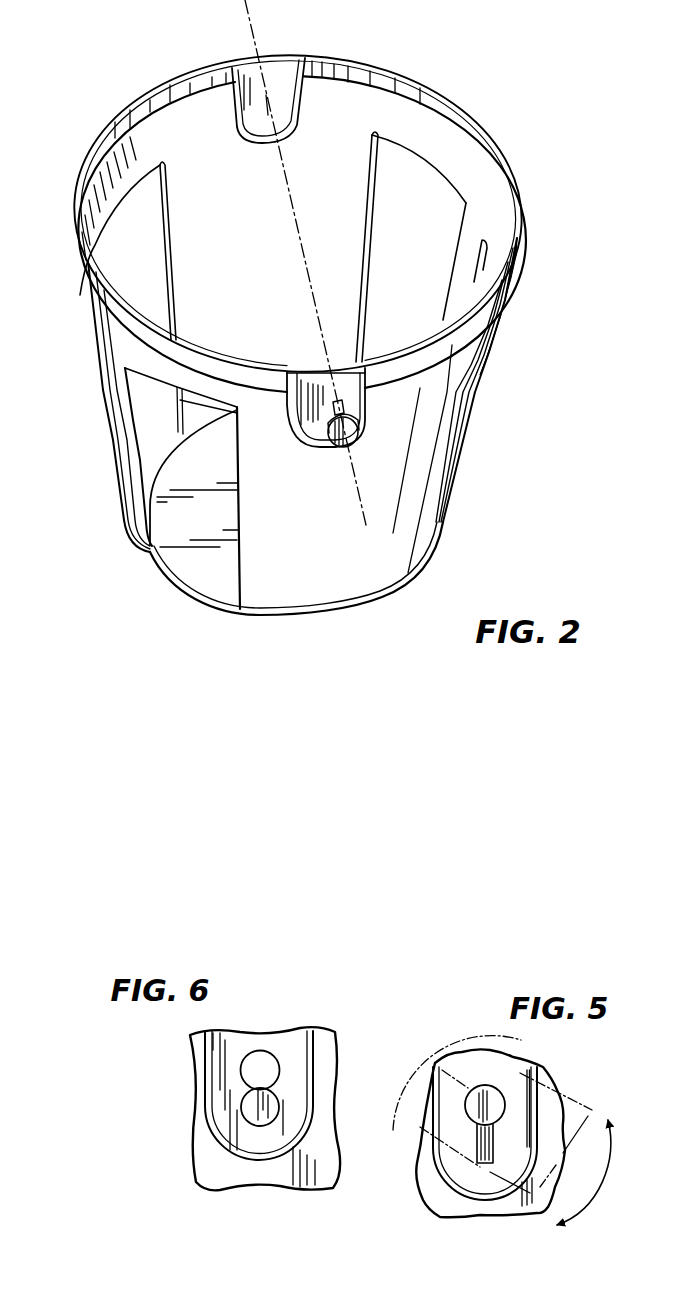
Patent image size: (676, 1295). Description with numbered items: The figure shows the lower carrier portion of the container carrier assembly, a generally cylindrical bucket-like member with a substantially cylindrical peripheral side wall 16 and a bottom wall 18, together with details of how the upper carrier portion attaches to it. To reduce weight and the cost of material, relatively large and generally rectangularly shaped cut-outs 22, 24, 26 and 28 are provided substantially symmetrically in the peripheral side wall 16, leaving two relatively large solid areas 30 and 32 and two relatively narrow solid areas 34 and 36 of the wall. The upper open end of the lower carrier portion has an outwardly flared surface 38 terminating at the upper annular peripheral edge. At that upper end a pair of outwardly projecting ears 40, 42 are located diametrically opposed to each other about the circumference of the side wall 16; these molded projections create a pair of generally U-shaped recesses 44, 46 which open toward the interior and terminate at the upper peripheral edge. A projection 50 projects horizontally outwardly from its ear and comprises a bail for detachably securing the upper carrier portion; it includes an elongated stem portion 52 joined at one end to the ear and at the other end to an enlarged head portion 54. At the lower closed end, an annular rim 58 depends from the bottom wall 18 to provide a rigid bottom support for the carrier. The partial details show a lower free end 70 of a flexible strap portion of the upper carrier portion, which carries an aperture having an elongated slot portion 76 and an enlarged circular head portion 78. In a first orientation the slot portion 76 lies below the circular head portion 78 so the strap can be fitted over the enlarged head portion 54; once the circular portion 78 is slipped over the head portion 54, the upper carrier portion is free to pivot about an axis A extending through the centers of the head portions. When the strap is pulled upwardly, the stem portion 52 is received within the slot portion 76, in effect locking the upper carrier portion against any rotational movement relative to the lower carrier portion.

In FIG. 2, the peripheral side wall 16 is at (473, 394).
In FIG. 2, the bottom wall 18 is at (203, 567).
In FIG. 2, the cut-out 22 is at (150, 272).
In FIG. 2, the cut-out 24 is at (147, 412).
In FIG. 2, the cut-out 26 is at (388, 177).
In FIG. 2, the cut-out 28 is at (480, 263).
In FIG. 2, the solid area 30 is at (343, 268).
In FIG. 2, the solid area 32 is at (433, 482).
In FIG. 2, the narrow solid area 34 is at (130, 473).
In FIG. 2, the narrow solid area 36 is at (447, 303).
In FIG. 2, the outwardly flared surface 38 is at (460, 128).
In FIG. 2, the ear 40 is at (286, 52).
In FIG. 2, the ear 42 is at (299, 449).
In FIG. 2, the U-shaped recess 44 is at (240, 136).
In FIG. 2, the U-shaped recess 46 is at (313, 370).
In FIG. 2, the projection 50 is at (338, 452).
In FIG. 2, the elongated stem portion 52 is at (343, 404).
In FIG. 2, the enlarged head portion 54 is at (358, 433).
In FIG. 6, the enlarged head portion 54 is at (270, 1107).
In FIG. 5, the enlarged head portion 54 is at (488, 1095).
In FIG. 2, the annular rim 58 is at (222, 606).
In FIG. 6, the lower free end 70 is at (260, 1153).
In FIG. 5, the lower free end 70 is at (492, 1194).
In FIG. 5, the elongated slot portion 76 is at (480, 1163).
In FIG. 6, the enlarged circular head portion 78 is at (261, 1062).
In FIG. 2, the axis A is at (298, 262).